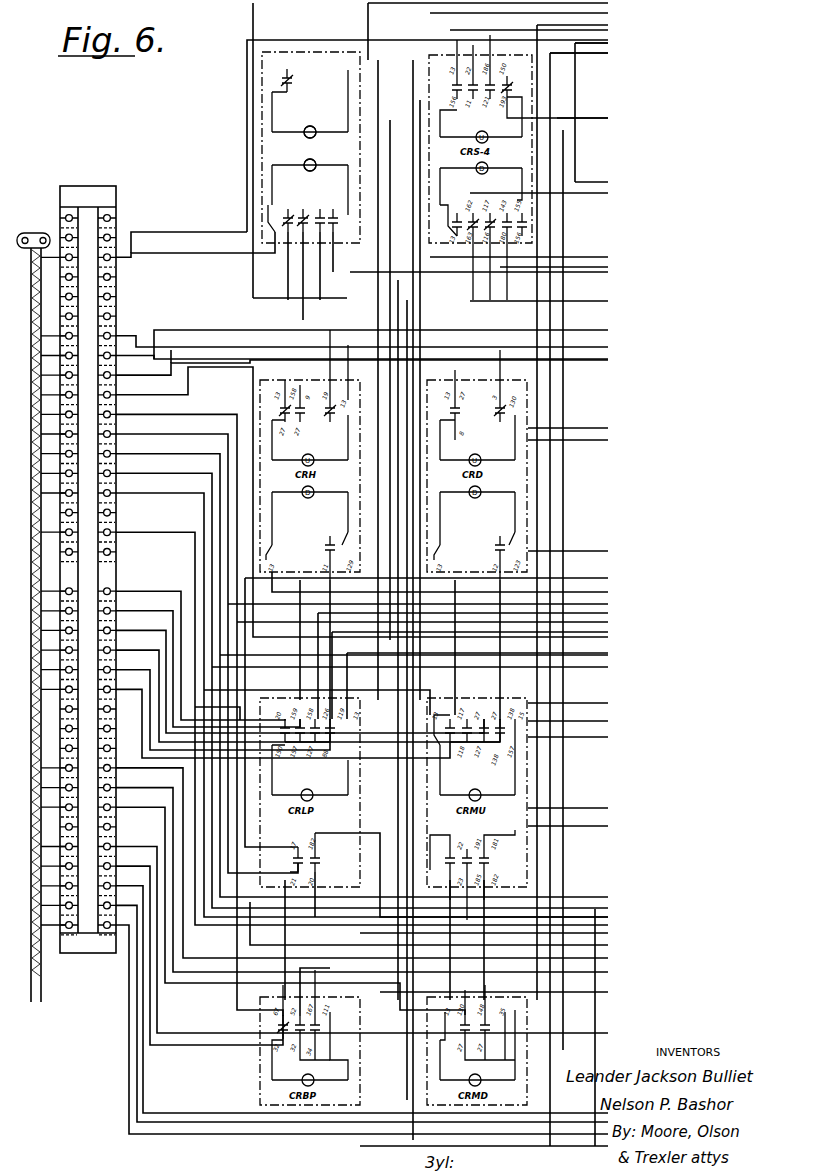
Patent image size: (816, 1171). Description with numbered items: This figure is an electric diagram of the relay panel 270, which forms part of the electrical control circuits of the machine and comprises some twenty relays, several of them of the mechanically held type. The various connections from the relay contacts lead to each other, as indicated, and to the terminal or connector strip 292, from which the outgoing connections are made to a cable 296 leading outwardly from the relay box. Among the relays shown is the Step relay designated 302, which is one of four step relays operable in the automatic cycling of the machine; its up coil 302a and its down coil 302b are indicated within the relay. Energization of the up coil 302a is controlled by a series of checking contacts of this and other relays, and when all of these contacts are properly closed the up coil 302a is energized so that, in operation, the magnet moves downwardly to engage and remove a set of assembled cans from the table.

The terminal strip 292 is at (112, 312).
The cable 296 is at (42, 992).
The Step relay CRS-1 302 is at (313, 62).
The up coil 302a is at (304, 132).
The down coil 302b is at (304, 170).
The relay panel 270 is at (620, 113).